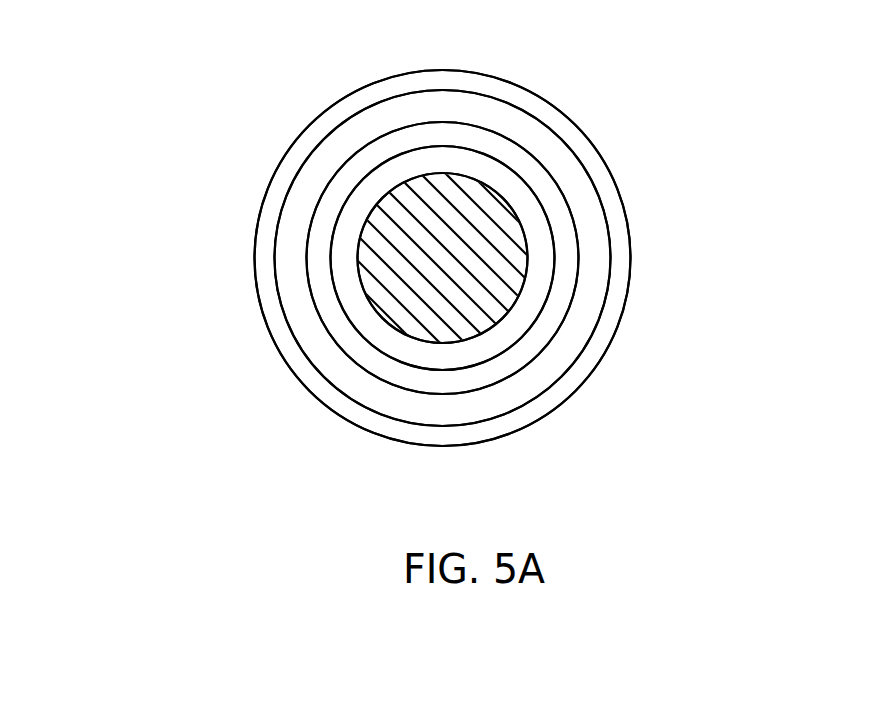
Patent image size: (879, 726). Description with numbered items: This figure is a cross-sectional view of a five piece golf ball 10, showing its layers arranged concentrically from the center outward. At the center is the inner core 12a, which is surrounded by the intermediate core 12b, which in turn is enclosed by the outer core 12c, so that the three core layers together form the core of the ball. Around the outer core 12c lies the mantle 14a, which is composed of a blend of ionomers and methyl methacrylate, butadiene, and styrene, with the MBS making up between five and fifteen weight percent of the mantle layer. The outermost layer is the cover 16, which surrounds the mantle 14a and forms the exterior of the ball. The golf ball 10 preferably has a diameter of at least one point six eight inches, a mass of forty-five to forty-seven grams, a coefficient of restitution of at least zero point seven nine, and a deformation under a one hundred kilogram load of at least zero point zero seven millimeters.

The golf ball 10 is at (421, 227).
The inner core 12a is at (503, 292).
The intermediate core 12b is at (373, 335).
The outer core 12c is at (315, 267).
The mantle 14a is at (343, 137).
The cover 16 is at (541, 95).